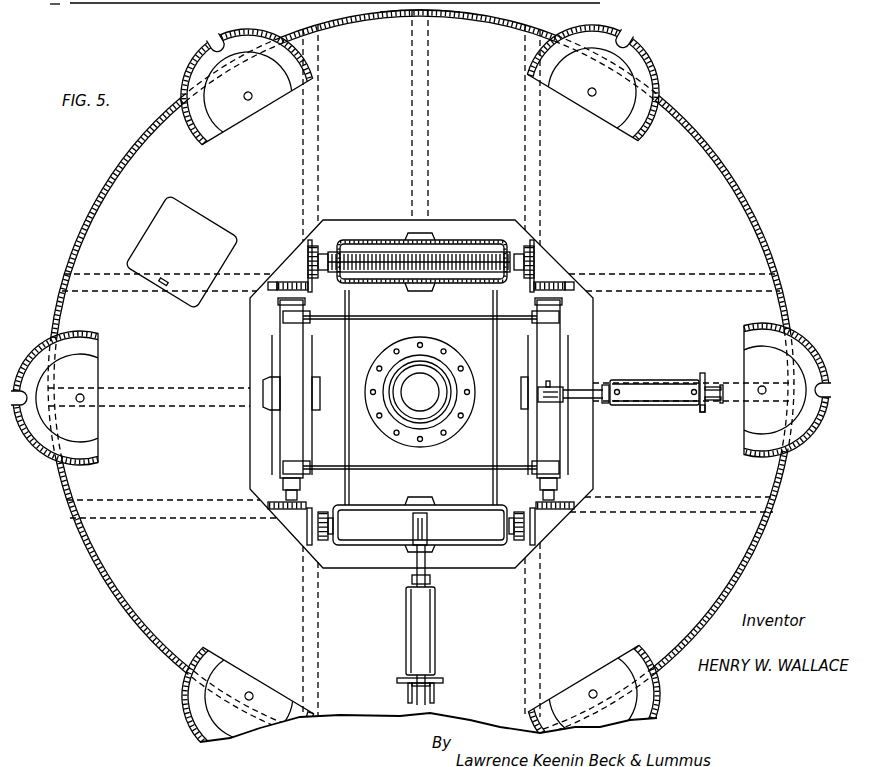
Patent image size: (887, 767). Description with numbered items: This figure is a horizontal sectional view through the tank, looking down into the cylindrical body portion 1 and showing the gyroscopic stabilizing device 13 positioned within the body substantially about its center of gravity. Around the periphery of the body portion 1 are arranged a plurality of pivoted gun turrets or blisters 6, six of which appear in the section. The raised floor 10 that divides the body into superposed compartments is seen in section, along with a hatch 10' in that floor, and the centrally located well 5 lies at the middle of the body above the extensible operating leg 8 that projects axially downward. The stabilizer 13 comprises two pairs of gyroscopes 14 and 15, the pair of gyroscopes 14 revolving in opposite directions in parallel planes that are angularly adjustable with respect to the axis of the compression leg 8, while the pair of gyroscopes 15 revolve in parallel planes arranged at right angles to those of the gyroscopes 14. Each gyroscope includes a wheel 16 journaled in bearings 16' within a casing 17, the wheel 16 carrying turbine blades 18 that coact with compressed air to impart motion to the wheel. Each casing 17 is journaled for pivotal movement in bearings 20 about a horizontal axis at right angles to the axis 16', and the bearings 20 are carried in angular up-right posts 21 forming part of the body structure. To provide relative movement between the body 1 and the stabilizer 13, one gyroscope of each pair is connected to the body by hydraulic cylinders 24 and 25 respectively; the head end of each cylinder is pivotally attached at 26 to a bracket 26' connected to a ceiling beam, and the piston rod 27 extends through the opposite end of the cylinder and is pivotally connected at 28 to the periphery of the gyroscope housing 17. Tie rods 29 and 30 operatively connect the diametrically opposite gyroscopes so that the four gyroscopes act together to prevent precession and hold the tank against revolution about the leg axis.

The cylindrical body portion 1 is at (763, 222).
The well 5 is at (375, 14).
The pivoted gun turrets or blisters 6 is at (195, 62).
The extensible operating leg 8 is at (378, 357).
The raised floor 10 is at (421, 342).
The hatch 10' is at (173, 252).
The gyroscopic stabilizing device 13 is at (254, 426).
The pair of gyroscopes 14 is at (461, 236).
The pair of gyroscopes 15 is at (270, 346).
The wheel 16 is at (419, 232).
The bearings 16' is at (432, 238).
The casing 17 is at (278, 362).
The turbine blades 18 is at (354, 256).
The bearings 20 is at (290, 280).
The angular up-right posts 21 is at (548, 245).
The hydraulic cylinder 24 is at (656, 381).
The hydraulic cylinder 25 is at (417, 627).
The pivotal attachment 26 is at (562, 524).
The bracket 26' is at (574, 545).
The piston rod 27 is at (596, 386).
The pivotal connection 28 is at (548, 382).
The tie rod 29 is at (463, 320).
The tie rod 30 is at (349, 447).